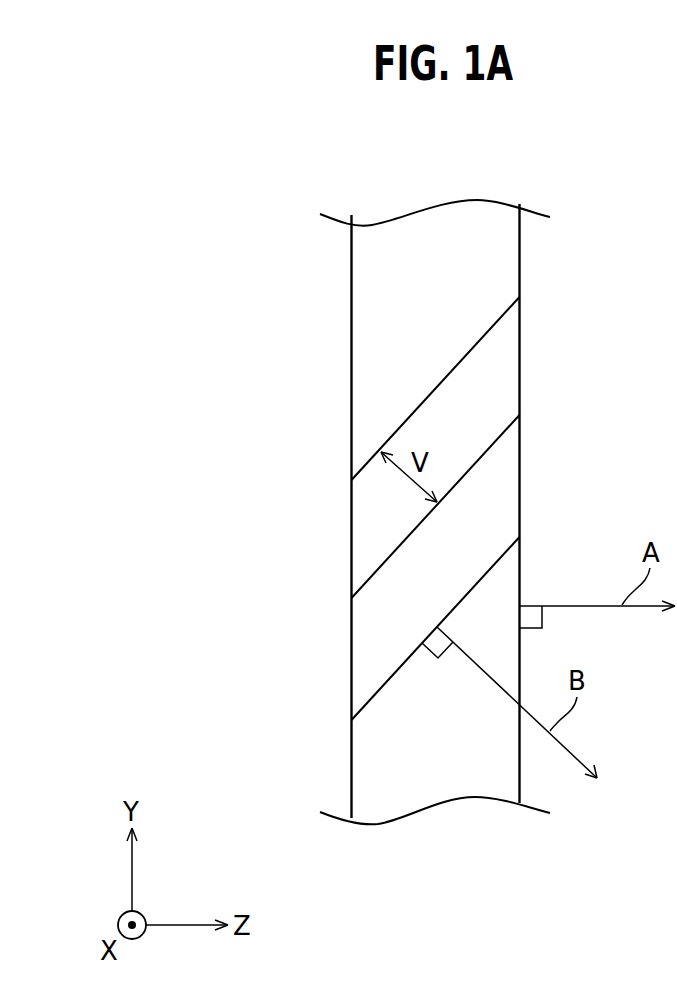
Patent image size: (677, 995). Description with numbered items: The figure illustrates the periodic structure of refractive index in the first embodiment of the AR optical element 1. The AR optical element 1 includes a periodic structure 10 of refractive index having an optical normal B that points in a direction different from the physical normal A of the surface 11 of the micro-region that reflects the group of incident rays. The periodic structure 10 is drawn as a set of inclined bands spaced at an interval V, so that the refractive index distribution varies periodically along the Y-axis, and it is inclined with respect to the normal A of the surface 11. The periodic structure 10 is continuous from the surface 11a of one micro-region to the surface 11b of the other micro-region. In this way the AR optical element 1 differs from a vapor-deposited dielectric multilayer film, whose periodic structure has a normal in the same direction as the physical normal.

The AR optical element 1 is at (505, 178).
The periodic structure of refractive index 10 is at (385, 501).
The surface of the micro-region 11 is at (413, 511).
The surface of one micro-region 11a is at (352, 308).
The surface of the other micro-region 11b is at (520, 243).